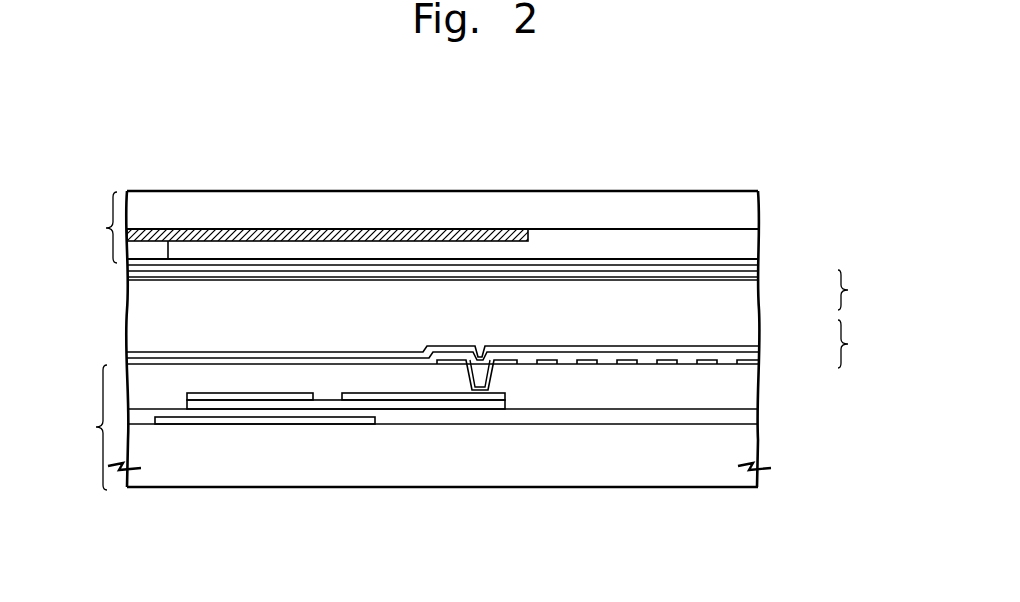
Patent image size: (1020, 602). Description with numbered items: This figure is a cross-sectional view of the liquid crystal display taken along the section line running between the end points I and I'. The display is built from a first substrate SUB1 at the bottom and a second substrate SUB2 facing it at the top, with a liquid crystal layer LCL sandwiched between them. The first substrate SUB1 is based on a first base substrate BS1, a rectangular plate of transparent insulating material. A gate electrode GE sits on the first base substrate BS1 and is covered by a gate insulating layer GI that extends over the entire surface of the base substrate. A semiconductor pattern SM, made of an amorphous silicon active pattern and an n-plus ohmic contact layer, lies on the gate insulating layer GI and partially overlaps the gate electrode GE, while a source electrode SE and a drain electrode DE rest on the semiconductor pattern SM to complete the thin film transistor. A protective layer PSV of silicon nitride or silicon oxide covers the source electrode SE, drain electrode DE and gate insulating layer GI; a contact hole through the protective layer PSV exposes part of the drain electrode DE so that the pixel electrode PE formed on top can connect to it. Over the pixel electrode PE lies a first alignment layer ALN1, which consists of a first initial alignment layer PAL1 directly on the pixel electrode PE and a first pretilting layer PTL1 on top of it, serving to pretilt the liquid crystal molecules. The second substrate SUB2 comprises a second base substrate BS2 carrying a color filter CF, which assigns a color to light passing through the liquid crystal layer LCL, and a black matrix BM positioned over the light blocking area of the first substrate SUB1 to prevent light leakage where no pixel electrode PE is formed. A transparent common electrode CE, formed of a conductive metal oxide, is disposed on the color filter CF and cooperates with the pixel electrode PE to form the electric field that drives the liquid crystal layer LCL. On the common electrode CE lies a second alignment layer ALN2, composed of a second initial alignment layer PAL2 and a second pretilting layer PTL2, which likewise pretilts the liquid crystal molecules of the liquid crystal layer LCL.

The black matrix BM is at (350, 236).
The second base substrate BS2 is at (747, 210).
The color filter CF is at (747, 243).
The common electrode CE is at (751, 263).
The second initial alignment layer PAL2 is at (755, 269).
The second pretilting layer PTL2 is at (757, 277).
The second alignment layer ALN2 is at (870, 290).
The first pretilting layer PTL1 is at (757, 345).
The first initial alignment layer PAL1 is at (750, 351).
The first alignment layer ALN1 is at (870, 344).
The protective layer PSV is at (745, 383).
The gate insulating layer GI is at (745, 417).
The first base substrate BS1 is at (745, 448).
The first substrate SUB1 is at (77, 427).
The second substrate SUB2 is at (86, 227).
The liquid crystal layer LCL is at (127, 316).
The gate electrode GE is at (202, 421).
The source electrode SE is at (260, 396).
The semiconductor pattern SM is at (310, 402).
The drain electrode DE is at (370, 396).
The pixel electrode PE is at (550, 362).
The line I-I' I is at (120, 514).
The line I- I' is at (756, 514).